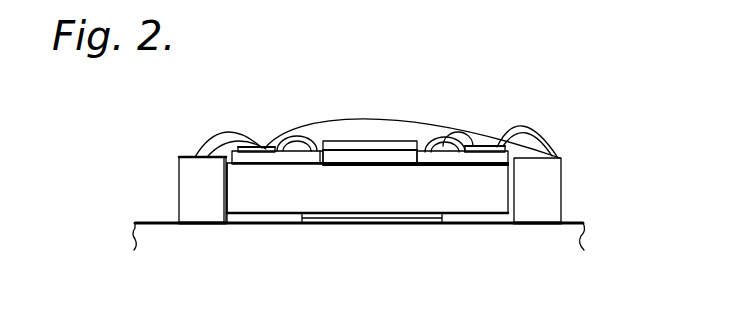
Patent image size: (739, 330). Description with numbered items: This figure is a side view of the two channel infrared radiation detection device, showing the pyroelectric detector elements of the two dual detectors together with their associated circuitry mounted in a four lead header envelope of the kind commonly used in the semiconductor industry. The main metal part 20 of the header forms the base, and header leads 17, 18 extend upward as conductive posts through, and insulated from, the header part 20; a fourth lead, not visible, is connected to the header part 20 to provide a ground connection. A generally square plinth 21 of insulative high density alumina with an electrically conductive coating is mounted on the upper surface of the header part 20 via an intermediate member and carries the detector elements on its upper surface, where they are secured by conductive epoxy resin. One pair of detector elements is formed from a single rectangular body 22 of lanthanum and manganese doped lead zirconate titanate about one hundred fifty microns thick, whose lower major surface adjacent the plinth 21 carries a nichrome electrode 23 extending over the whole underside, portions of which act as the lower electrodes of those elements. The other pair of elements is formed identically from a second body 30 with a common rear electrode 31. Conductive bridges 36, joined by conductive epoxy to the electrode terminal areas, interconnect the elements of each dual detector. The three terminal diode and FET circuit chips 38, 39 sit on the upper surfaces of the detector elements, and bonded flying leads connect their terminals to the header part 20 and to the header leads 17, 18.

The header lead 17 is at (187, 168).
The header lead 18 is at (560, 158).
The main metal part of the header 20 is at (573, 222).
The plinth 21 is at (283, 200).
The rectangular body of pyroelectric ceramic material 22 is at (243, 158).
The electrode 23 is at (313, 151).
The body of pyroelectric material 30 is at (500, 152).
The common rear electrode 31 is at (496, 157).
The conductive bridges 36 is at (338, 141).
The chip 38 is at (258, 148).
The chip 39 is at (480, 147).